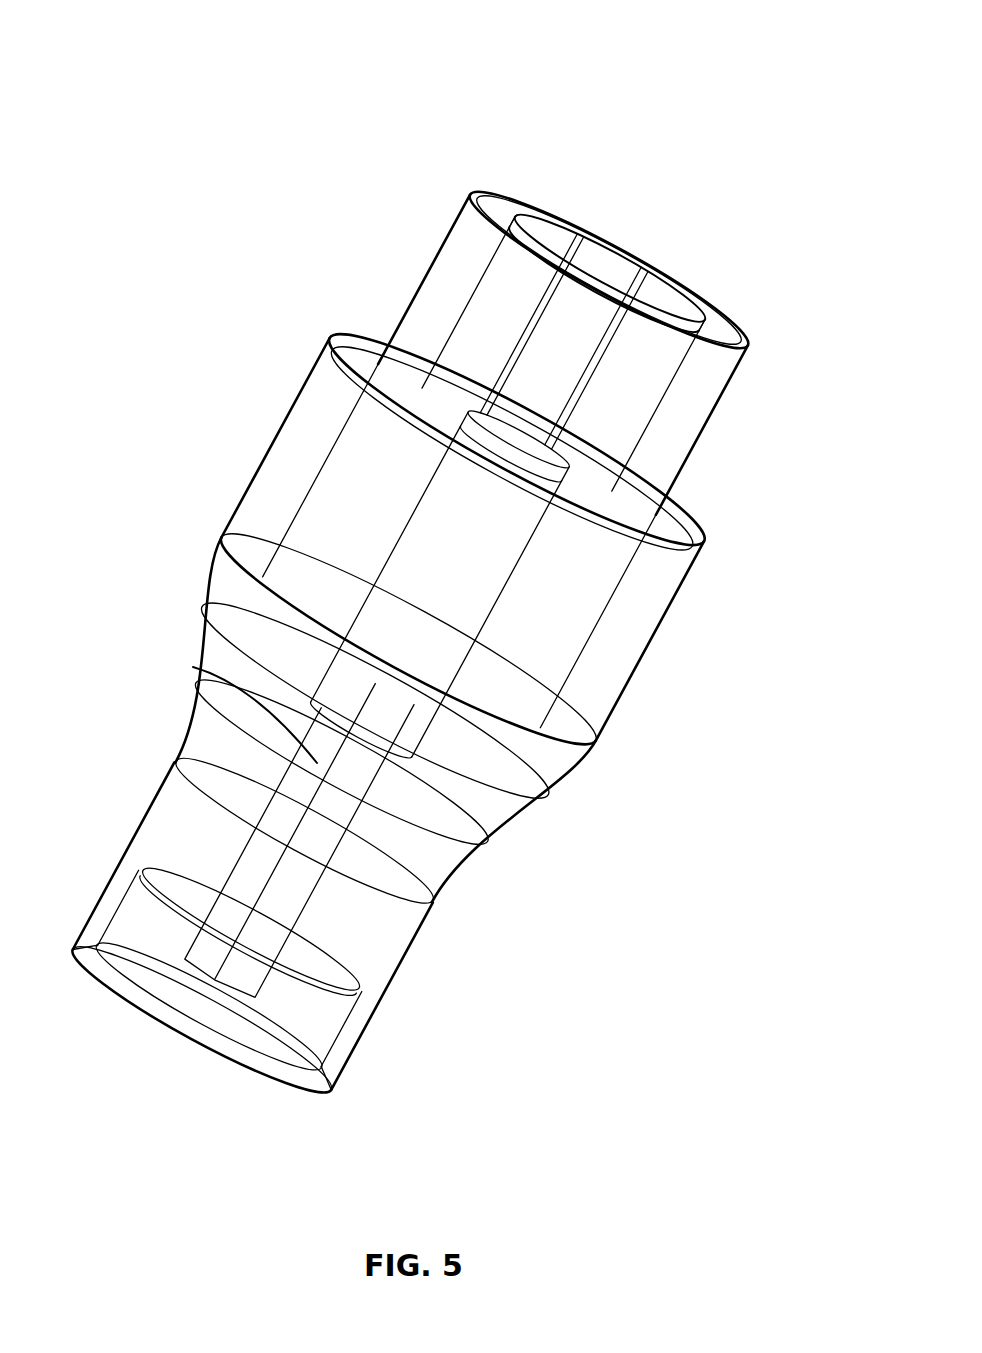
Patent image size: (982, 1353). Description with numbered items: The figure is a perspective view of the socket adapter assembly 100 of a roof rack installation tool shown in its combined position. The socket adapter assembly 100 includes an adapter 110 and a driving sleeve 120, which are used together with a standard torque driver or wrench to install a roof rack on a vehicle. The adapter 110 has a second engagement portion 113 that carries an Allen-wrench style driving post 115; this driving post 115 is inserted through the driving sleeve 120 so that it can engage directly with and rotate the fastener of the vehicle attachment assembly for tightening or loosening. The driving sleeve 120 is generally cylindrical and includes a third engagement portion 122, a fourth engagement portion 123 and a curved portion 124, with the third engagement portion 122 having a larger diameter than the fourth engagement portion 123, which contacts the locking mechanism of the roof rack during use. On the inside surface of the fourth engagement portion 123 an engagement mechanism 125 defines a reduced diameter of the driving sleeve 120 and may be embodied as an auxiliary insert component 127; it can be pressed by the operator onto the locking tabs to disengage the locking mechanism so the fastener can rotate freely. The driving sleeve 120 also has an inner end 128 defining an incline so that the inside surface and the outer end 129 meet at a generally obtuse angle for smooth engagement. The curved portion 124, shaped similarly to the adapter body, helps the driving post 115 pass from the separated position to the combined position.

The socket adapter assembly 100 is at (166, 64).
The adapter 110 is at (757, 261).
The second engagement portion 113 is at (598, 245).
The driving post 115 is at (196, 667).
The driving sleeve 120 is at (607, 1080).
The third engagement portion 122 is at (638, 643).
The fourth engagement portion 123 is at (378, 968).
The curved portion 124 is at (188, 712).
The engagement mechanism 125 is at (354, 1112).
The auxiliary insert component 127 is at (118, 905).
The inner end 128 is at (175, 888).
The outer end 129 is at (180, 1038).